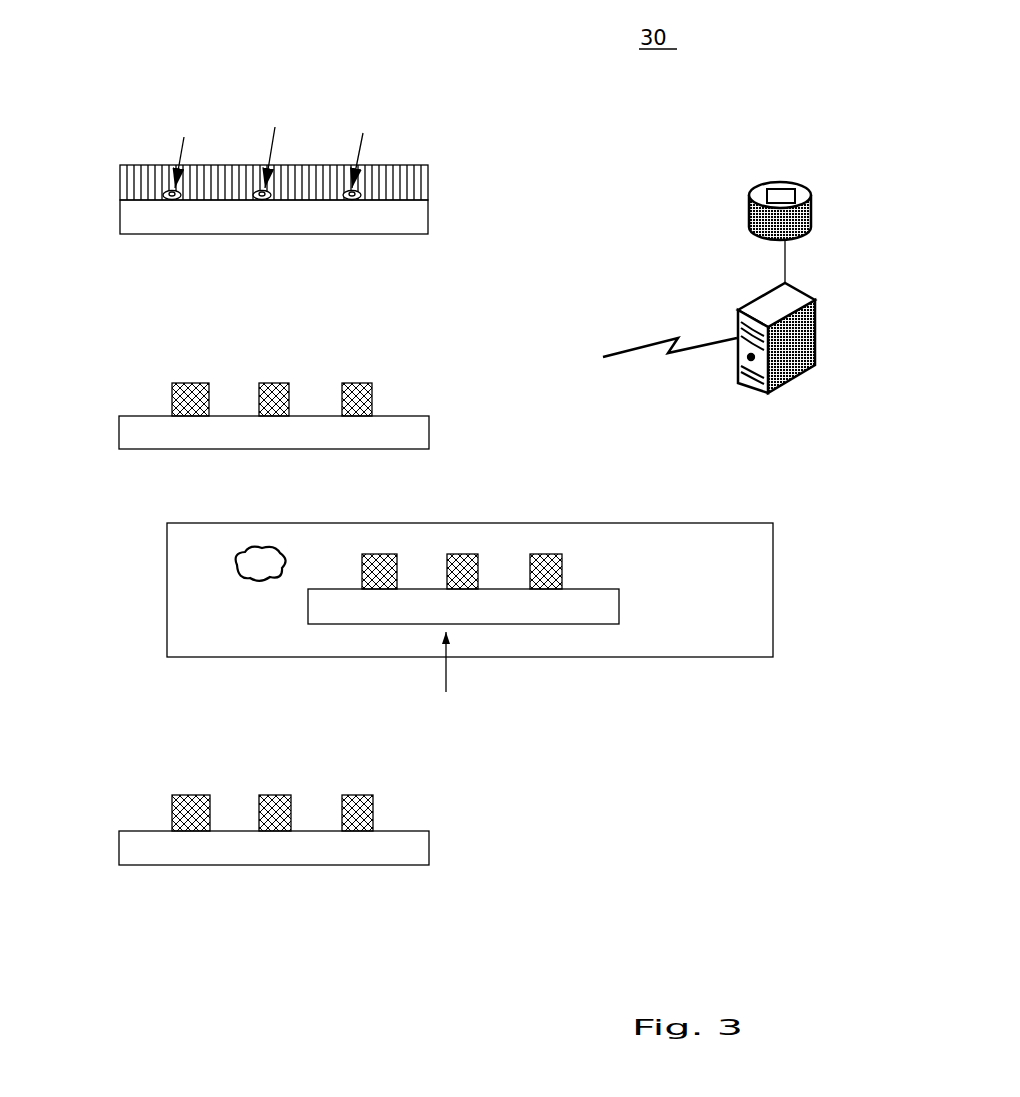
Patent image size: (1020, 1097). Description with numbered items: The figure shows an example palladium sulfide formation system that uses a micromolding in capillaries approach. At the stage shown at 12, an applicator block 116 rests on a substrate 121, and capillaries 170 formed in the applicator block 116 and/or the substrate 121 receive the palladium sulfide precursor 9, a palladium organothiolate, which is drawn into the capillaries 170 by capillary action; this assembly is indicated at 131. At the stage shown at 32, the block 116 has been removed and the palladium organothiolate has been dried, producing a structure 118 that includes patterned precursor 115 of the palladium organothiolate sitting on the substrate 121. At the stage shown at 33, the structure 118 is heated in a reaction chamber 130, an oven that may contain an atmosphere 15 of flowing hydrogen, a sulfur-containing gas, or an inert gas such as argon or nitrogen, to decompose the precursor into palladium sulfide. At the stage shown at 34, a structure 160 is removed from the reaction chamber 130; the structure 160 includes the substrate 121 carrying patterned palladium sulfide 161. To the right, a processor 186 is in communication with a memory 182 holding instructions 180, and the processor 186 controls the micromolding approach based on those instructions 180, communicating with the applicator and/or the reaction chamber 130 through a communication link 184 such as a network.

The drying step 12 is at (102, 190).
The applicator block 116 is at (413, 182).
The palladium sulfide precursor 9 is at (348, 201).
The capillaries 170 is at (269, 145).
The coated substrate assembly 131 is at (488, 163).
The substrate 121 is at (402, 220).
The developing step 32 is at (85, 405).
The patterned precursor 115 is at (403, 398).
The structure 118 is at (477, 380).
The heating step 33 is at (153, 572).
The reaction chamber 130 is at (458, 523).
The atmosphere 15 is at (265, 552).
The removal step 34 is at (100, 822).
The patterned palladium sulfide 161 is at (413, 815).
The structure 160 is at (493, 795).
The instructions 180 is at (767, 187).
The memory 182 is at (763, 237).
The communication link 184 is at (668, 353).
The processor 186 is at (762, 397).